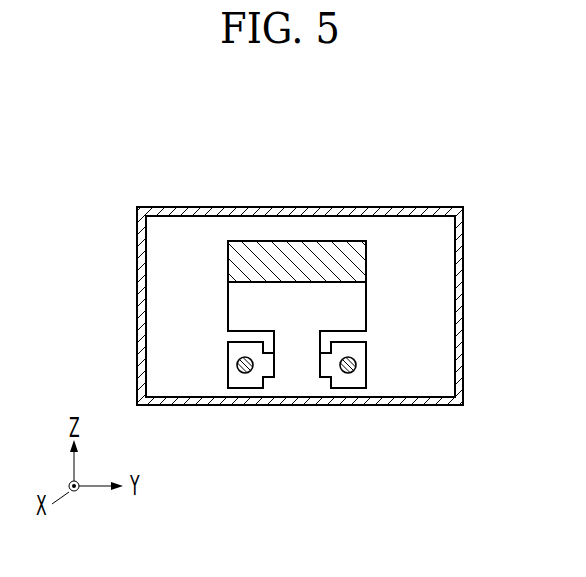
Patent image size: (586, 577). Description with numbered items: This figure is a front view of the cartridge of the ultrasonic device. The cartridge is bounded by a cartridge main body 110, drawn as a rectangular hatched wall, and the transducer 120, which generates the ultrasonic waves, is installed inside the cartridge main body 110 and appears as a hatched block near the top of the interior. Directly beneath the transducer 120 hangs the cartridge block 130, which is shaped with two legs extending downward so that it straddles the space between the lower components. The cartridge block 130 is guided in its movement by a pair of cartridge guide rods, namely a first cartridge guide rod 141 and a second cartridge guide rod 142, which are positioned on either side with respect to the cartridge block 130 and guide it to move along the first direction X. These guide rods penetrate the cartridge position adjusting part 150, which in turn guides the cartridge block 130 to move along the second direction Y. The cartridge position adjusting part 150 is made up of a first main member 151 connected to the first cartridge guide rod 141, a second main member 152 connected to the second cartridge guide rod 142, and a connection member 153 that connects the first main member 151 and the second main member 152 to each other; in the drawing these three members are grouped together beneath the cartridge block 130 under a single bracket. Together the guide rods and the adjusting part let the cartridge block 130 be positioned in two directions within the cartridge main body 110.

The cartridge main body 110 is at (458, 243).
The transducer 120 is at (314, 250).
The cartridge block 130 is at (342, 303).
The first cartridge guide rod 141 is at (239, 361).
The second cartridge guide rod 142 is at (350, 373).
The cartridge position adjusting part 150 is at (284, 424).
The first main member 151 is at (244, 374).
The second main member 152 is at (329, 406).
The connection member 153 is at (268, 382).